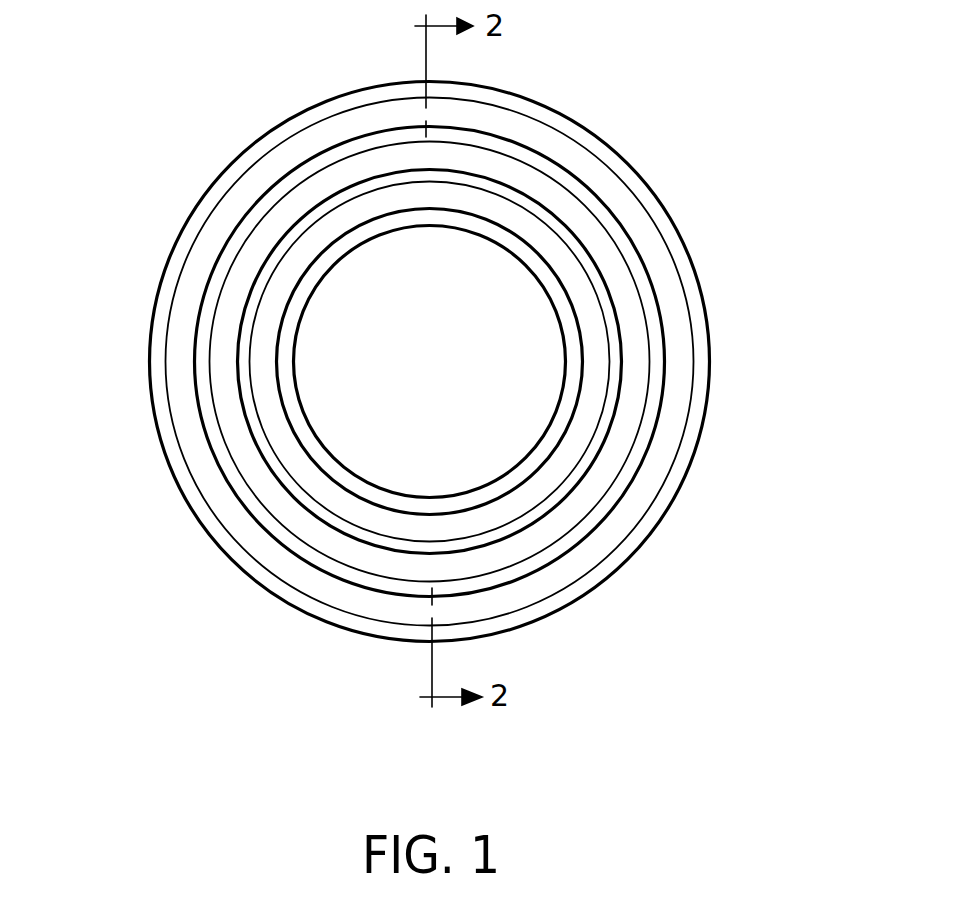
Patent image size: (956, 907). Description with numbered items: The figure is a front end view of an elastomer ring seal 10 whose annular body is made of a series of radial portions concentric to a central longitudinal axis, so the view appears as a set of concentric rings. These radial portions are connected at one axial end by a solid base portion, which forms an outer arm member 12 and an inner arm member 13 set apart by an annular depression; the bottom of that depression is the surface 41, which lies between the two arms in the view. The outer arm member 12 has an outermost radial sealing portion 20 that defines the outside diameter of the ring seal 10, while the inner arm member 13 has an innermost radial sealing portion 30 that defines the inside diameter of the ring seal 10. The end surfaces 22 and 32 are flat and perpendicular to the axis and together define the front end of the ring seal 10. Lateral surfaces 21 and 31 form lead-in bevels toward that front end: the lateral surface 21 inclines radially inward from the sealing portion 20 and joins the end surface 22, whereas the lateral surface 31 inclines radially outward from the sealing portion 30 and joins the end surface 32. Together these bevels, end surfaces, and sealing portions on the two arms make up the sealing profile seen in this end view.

The elastomer ring seal 10 is at (357, 643).
The outer arm member 12 is at (647, 240).
The inner arm member 13 is at (593, 390).
The outermost radial sealing portion 20 is at (347, 92).
The lateral surface 21 is at (258, 147).
The end surface 22 is at (537, 137).
The innermost radial sealing portion 30 is at (340, 258).
The lateral surface 31 is at (562, 425).
The end surface 32 is at (560, 467).
The surface 41 is at (287, 512).